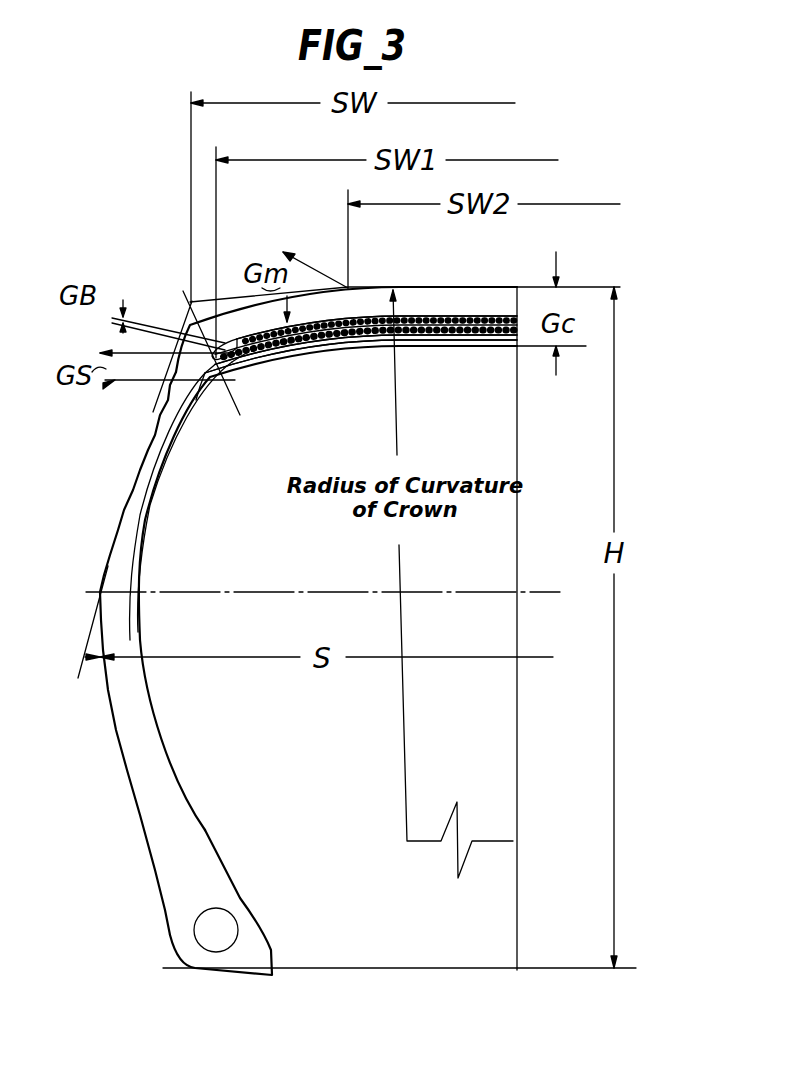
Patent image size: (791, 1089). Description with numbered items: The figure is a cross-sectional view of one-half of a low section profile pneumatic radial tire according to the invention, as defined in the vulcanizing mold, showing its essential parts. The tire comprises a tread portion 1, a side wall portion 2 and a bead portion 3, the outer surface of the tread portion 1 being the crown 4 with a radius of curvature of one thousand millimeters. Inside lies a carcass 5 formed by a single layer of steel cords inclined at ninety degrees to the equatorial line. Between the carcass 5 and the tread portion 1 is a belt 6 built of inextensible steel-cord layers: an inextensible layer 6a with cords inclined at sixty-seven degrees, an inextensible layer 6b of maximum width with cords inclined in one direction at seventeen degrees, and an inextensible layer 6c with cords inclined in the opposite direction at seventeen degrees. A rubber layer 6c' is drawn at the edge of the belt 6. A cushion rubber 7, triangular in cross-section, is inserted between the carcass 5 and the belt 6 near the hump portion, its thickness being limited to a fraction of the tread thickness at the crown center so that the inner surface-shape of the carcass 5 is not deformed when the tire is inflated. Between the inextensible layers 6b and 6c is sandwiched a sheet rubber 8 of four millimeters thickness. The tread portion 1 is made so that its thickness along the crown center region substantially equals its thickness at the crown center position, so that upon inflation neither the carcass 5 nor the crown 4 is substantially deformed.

The tread portion 1 is at (405, 266).
The side wall portion 2 is at (100, 588).
The bead portion 3 is at (178, 932).
The crown 4 is at (370, 290).
The carcass 5 is at (309, 363).
The belt 6 is at (425, 316).
The inextensible layer 6a is at (428, 337).
The inextensible layer 6b is at (456, 341).
The inextensible layer 6c is at (361, 391).
The rubber layer at belt edge 6c' is at (239, 286).
The cushion rubber 7 is at (218, 372).
The sheet rubber 8 is at (256, 362).